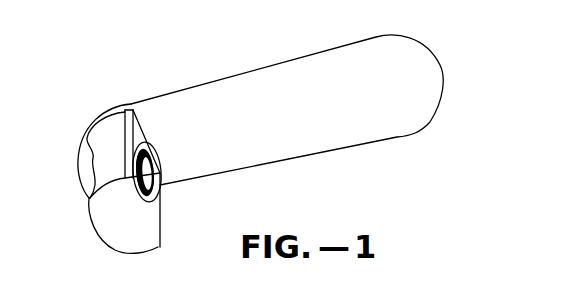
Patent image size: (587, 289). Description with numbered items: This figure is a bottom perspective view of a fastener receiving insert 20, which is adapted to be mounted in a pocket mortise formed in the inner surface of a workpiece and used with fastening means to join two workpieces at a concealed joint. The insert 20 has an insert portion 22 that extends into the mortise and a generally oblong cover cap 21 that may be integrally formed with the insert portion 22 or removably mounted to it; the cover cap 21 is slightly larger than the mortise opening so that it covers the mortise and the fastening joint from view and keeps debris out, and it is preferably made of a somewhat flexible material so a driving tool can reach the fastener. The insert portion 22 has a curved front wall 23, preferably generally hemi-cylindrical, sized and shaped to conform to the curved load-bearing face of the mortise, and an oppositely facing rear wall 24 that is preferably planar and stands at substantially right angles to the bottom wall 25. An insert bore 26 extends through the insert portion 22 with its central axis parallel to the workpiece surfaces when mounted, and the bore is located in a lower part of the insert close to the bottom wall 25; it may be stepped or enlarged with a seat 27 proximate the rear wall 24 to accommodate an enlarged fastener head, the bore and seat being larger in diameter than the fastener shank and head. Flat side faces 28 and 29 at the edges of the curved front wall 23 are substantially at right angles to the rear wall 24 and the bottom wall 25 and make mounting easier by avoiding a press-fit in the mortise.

The fastener receiving insert 20 is at (214, 65).
The cover cap 21 is at (348, 117).
The insert portion 22 is at (104, 174).
The curved front wall 23 is at (98, 137).
The rear wall 24 is at (158, 192).
The bottom wall 25 is at (124, 227).
The insert bore 26 is at (143, 175).
The seat 27 is at (150, 152).
The flat side face 28 is at (128, 108).
The flat side face 29 is at (152, 202).